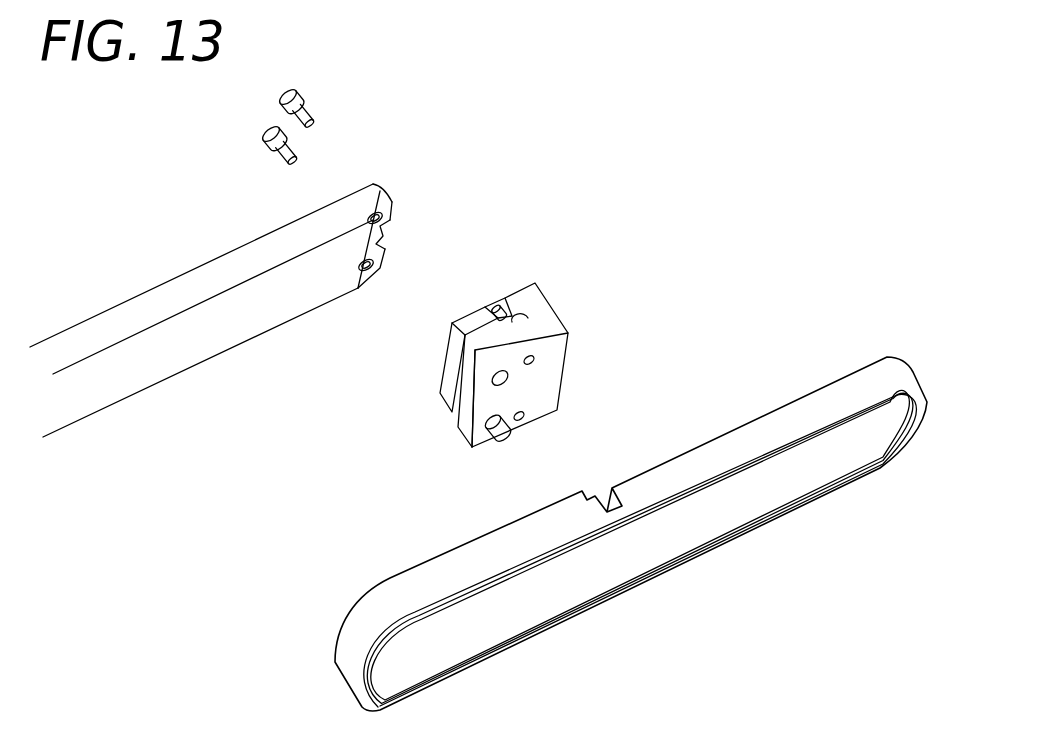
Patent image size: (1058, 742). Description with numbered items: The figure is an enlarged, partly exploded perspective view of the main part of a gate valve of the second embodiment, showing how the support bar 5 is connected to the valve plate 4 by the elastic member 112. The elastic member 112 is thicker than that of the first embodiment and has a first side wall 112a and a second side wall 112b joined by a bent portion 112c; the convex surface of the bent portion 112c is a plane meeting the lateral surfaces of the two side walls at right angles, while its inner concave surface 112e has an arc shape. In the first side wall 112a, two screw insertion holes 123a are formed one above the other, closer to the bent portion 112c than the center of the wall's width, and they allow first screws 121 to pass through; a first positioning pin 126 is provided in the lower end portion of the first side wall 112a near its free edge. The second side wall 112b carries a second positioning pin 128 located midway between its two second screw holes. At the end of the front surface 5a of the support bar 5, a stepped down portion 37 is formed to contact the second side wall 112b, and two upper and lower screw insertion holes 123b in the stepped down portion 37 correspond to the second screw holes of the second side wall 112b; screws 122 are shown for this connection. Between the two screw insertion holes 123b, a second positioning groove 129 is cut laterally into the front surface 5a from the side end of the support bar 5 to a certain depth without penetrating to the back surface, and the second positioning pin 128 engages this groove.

The valve plate 4 is at (740, 513).
The support bar 5 is at (242, 271).
The front surface 5a is at (192, 343).
The stepped down portion 37 is at (384, 217).
The elastic member 112 is at (501, 339).
The first side wall 112a is at (537, 390).
The second side wall 112b is at (447, 400).
The bent portion 112c is at (533, 296).
The inner concave surface 112e is at (523, 317).
The first screws 121 is at (500, 317).
The screws 122 is at (267, 135).
The screw insertion holes 123a is at (534, 358).
The screw insertion holes 123b is at (378, 205).
The first positioning pin 126 is at (502, 443).
The second positioning pin 128 is at (447, 343).
The second positioning groove 129 is at (385, 237).